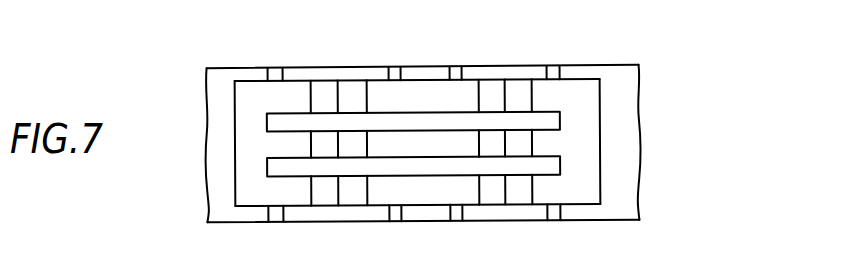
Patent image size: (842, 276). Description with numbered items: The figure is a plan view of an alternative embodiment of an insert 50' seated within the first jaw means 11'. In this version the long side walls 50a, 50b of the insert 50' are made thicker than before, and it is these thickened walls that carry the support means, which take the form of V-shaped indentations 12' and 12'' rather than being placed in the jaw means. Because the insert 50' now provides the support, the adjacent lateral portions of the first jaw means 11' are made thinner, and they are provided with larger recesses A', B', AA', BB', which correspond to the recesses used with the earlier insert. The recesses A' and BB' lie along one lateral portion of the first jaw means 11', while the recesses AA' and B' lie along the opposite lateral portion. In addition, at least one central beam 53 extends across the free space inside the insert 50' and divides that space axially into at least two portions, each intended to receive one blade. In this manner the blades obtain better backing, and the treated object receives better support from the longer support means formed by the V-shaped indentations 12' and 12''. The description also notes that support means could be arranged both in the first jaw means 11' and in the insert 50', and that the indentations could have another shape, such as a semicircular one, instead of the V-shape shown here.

The first jaw means 11' is at (437, 120).
The central beam 53 is at (620, 136).
The insert 50' is at (418, 177).
The long side wall 50a is at (250, 97).
The long side wall 50b is at (250, 188).
The V-shaped indentation 12' is at (334, 112).
The V-shaped indentation 12'' is at (505, 110).
The recess A' is at (338, 49).
The recess AA' is at (336, 240).
The recess BB' is at (533, 48).
The recess B' is at (504, 239).